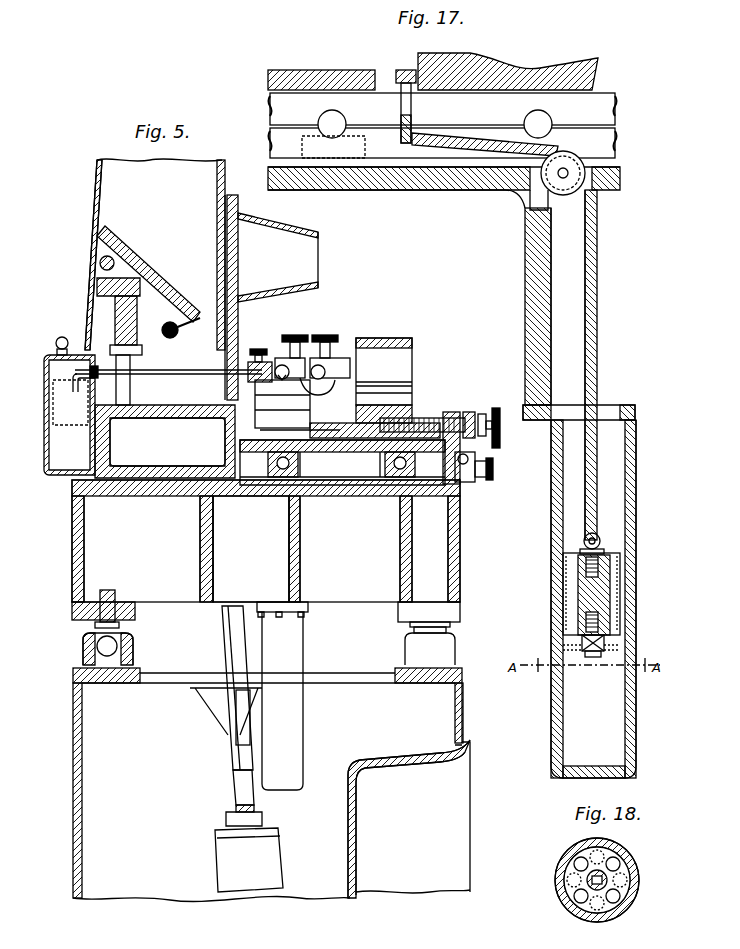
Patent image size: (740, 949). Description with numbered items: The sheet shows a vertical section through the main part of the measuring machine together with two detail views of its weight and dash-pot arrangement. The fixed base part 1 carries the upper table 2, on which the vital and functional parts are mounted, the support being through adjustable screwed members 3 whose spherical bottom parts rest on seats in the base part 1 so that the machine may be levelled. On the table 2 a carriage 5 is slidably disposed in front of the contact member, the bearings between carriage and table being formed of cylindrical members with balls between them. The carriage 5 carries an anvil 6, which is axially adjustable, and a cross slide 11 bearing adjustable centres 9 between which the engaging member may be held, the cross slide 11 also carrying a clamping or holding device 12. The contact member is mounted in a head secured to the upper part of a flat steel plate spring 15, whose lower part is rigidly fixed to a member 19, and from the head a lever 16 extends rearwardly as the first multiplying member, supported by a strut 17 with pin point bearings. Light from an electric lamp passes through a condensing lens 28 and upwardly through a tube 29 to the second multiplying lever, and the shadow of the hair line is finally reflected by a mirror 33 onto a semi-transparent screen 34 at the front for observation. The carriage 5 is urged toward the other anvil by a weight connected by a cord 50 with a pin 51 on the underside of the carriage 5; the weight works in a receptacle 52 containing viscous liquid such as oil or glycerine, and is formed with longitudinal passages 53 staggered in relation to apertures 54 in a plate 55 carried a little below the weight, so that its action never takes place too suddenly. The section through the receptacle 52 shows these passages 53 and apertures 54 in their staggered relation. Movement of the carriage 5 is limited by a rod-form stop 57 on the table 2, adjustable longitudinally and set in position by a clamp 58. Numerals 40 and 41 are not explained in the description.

In FIG. 5, the fixed base part 1 is at (271, 785).
In FIG. 17, the table 2 is at (488, 183).
In FIG. 5, the table 2 is at (266, 541).
In FIG. 5, the adjustable screwed members 3 is at (112, 636).
In FIG. 17, the carriage 5 is at (338, 80).
In FIG. 5, the carriage 5 is at (338, 492).
In FIG. 5, the anvil 6 is at (288, 368).
In FIG. 5, the adjustable centres 9 is at (320, 368).
In FIG. 5, the cross slide 11 is at (416, 418).
In FIG. 5, the clamping or holding device 12 is at (388, 338).
In FIG. 5, the plate spring 15 is at (264, 392).
In FIG. 5, the lever 16 is at (165, 370).
In FIG. 5, the strut 17 is at (207, 420).
In FIG. 5, the member 19 is at (167, 442).
In FIG. 5, the condensing lens 28 is at (212, 838).
In FIG. 5, the tube 29 is at (232, 640).
In FIG. 5, the mirror 33 is at (135, 258).
In FIG. 5, the semi-transparent screen 34 is at (226, 262).
In FIG. 17, the spring 40 is at (600, 582).
In FIG. 5, the valve 41 is at (283, 358).
In FIG. 17, the cord 50 is at (590, 280).
In FIG. 17, the pin 51 is at (413, 108).
In FIG. 17, the receptacle 52 is at (637, 613).
In FIG. 18, the receptacle 52 is at (638, 888).
In FIG. 5, the receptacle 52 is at (285, 722).
In FIG. 17, the longitudinal passages 53 is at (612, 593).
In FIG. 18, the apertures 54 is at (576, 860).
In FIG. 17, the plate 55 is at (606, 646).
In FIG. 18, the plate 55 is at (624, 868).
In FIG. 5, the stop 57 is at (492, 463).
In FIG. 5, the clamp 58 is at (493, 480).